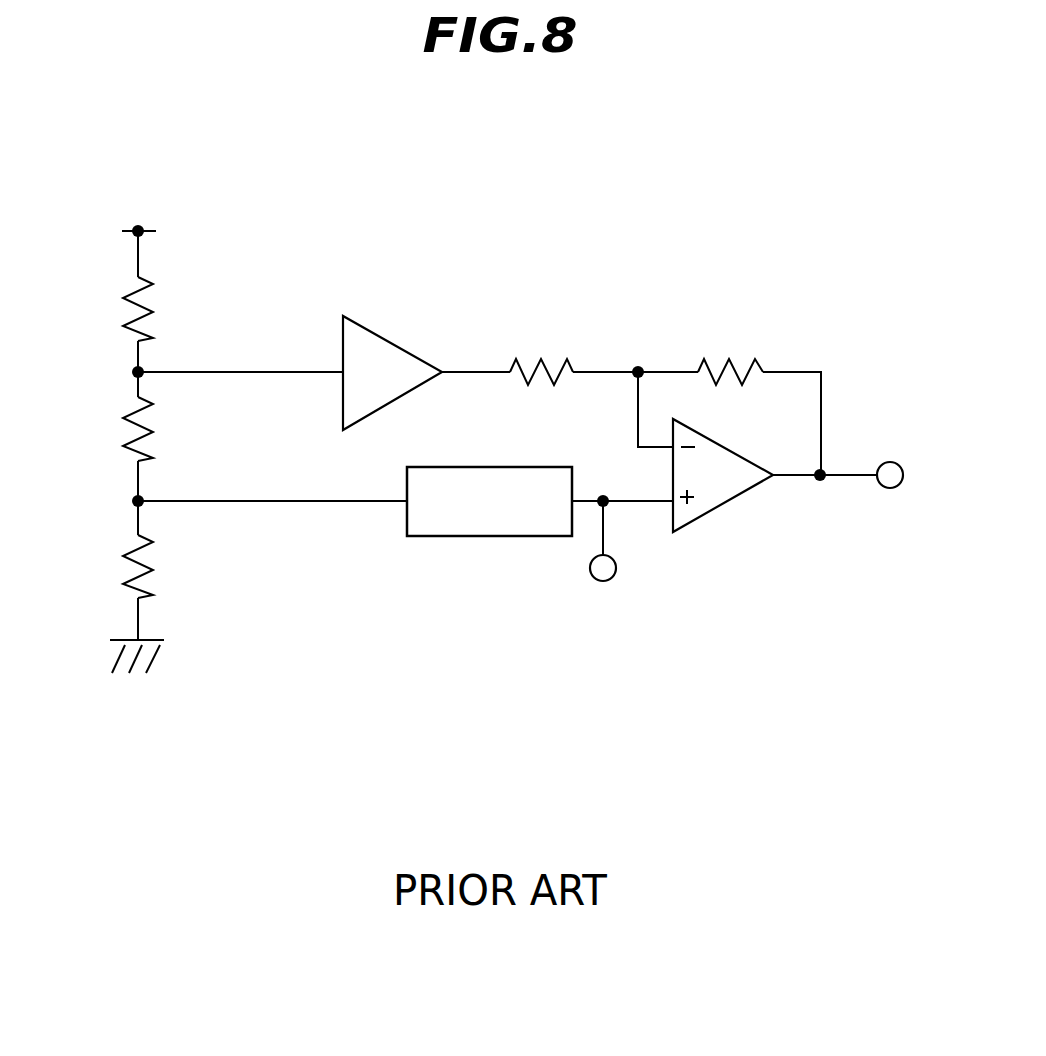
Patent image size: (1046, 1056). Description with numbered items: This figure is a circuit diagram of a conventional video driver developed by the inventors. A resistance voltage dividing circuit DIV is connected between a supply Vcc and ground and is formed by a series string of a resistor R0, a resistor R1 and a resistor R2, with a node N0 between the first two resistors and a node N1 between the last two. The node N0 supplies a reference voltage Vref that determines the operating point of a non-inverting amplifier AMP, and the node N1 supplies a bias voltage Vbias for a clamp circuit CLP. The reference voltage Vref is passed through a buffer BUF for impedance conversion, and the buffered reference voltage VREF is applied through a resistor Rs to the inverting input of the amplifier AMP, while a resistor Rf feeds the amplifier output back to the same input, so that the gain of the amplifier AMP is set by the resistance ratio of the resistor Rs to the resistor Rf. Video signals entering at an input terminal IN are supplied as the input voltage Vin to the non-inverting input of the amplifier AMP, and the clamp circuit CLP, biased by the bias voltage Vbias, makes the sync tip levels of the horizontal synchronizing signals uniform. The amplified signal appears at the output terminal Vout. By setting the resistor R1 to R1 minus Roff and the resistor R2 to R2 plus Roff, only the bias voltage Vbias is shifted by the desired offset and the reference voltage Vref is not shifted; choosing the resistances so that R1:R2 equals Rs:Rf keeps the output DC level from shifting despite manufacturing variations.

The resistance voltage dividing circuit DIV is at (199, 258).
The supply voltage Vcc is at (139, 214).
The resistor R0 is at (155, 309).
The node N0 is at (132, 370).
The resistor R1 is at (180, 429).
The node N1 is at (131, 499).
The resistor R2 is at (183, 566).
The reference voltage Vref is at (240, 355).
The buffer BUF is at (392, 341).
The reference voltage VREF is at (476, 356).
The resistor Rs is at (541, 392).
The resistor Rf is at (730, 392).
The bias voltage Vbias is at (272, 485).
The clamp circuit CLP is at (487, 537).
The input voltage Vin is at (622, 486).
The input terminal IN is at (616, 572).
The non-inverting amplifier AMP is at (717, 508).
The output terminal Vout is at (845, 494).